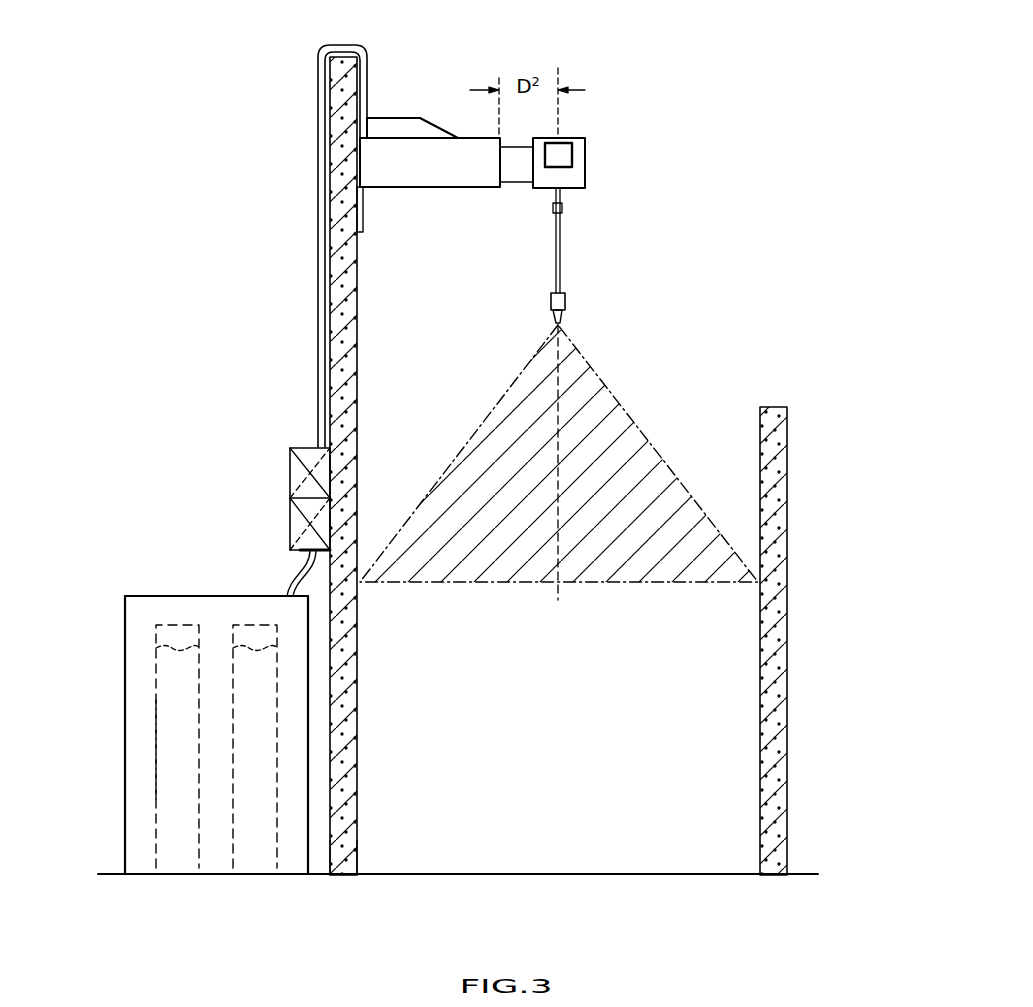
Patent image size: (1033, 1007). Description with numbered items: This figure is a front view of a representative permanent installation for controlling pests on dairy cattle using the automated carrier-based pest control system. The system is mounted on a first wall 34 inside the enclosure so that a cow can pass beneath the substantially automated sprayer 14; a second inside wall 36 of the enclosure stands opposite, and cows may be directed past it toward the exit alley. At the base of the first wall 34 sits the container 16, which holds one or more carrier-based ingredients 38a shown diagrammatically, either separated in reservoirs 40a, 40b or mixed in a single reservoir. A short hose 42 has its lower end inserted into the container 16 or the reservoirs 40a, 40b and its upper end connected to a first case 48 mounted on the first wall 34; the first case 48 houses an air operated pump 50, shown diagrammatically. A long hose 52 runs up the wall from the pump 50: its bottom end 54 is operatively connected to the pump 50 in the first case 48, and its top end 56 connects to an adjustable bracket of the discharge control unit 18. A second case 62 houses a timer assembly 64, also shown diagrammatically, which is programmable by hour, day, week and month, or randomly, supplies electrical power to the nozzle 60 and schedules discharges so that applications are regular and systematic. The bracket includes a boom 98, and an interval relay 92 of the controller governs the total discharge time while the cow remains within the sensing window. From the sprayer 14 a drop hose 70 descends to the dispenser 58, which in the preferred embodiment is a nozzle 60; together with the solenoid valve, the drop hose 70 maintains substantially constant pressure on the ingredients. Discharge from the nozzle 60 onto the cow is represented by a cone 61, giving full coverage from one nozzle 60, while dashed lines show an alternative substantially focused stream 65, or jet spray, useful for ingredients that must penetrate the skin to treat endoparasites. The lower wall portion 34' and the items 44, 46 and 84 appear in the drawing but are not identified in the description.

The sprayer 14 is at (614, 122).
The container 16 is at (124, 612).
The discharge control unit 18 is at (214, 376).
The first wall 34 is at (386, 466).
The lower end of support post 34' is at (317, 875).
The second inside wall 36 is at (758, 447).
The carrier-based ingredient 38a is at (167, 755).
The reservoir 40a is at (170, 866).
The reservoir 40b is at (261, 866).
The short hose 42 is at (307, 568).
The tank top / outlet 44 is at (290, 594).
The valve fitting 46 is at (313, 550).
The first case 48 is at (290, 507).
The pump 50 is at (290, 530).
The long hose 52 is at (317, 352).
The bottom end of long hose 54 is at (317, 448).
The top end of long hose 56 is at (372, 120).
The dispenser 58 is at (567, 317).
The nozzle 60 is at (556, 322).
The cone 61 is at (478, 582).
The second case 62 is at (290, 455).
The timer assembly 64 is at (290, 482).
The substantially focused stream 65 is at (558, 548).
The drop hose 70 is at (562, 267).
The support arm 84 is at (413, 187).
The interval relay 92 is at (520, 183).
The boom 98 is at (587, 162).